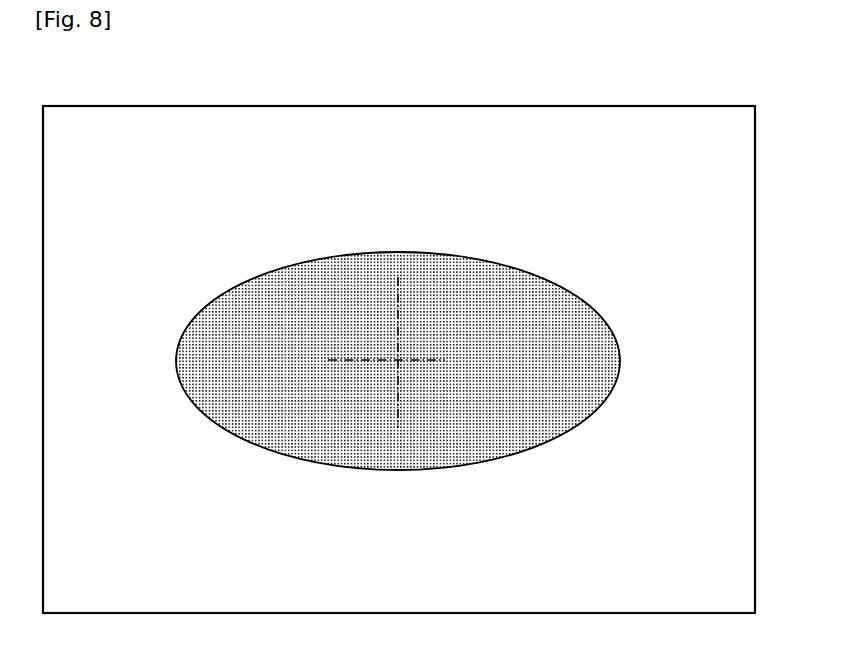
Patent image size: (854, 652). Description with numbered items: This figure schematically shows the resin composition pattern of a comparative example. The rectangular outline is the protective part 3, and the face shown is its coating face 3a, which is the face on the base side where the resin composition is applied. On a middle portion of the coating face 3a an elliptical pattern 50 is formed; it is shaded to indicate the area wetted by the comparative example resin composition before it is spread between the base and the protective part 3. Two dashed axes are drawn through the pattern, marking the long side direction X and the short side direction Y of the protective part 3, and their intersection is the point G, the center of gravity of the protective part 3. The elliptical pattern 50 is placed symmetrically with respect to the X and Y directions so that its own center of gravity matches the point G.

The protective part 3 is at (322, 102).
The coating face 3a is at (431, 112).
The elliptical pattern 50 is at (473, 249).
The center of gravity G is at (399, 362).
The long side direction X is at (464, 358).
The short side direction Y is at (401, 292).